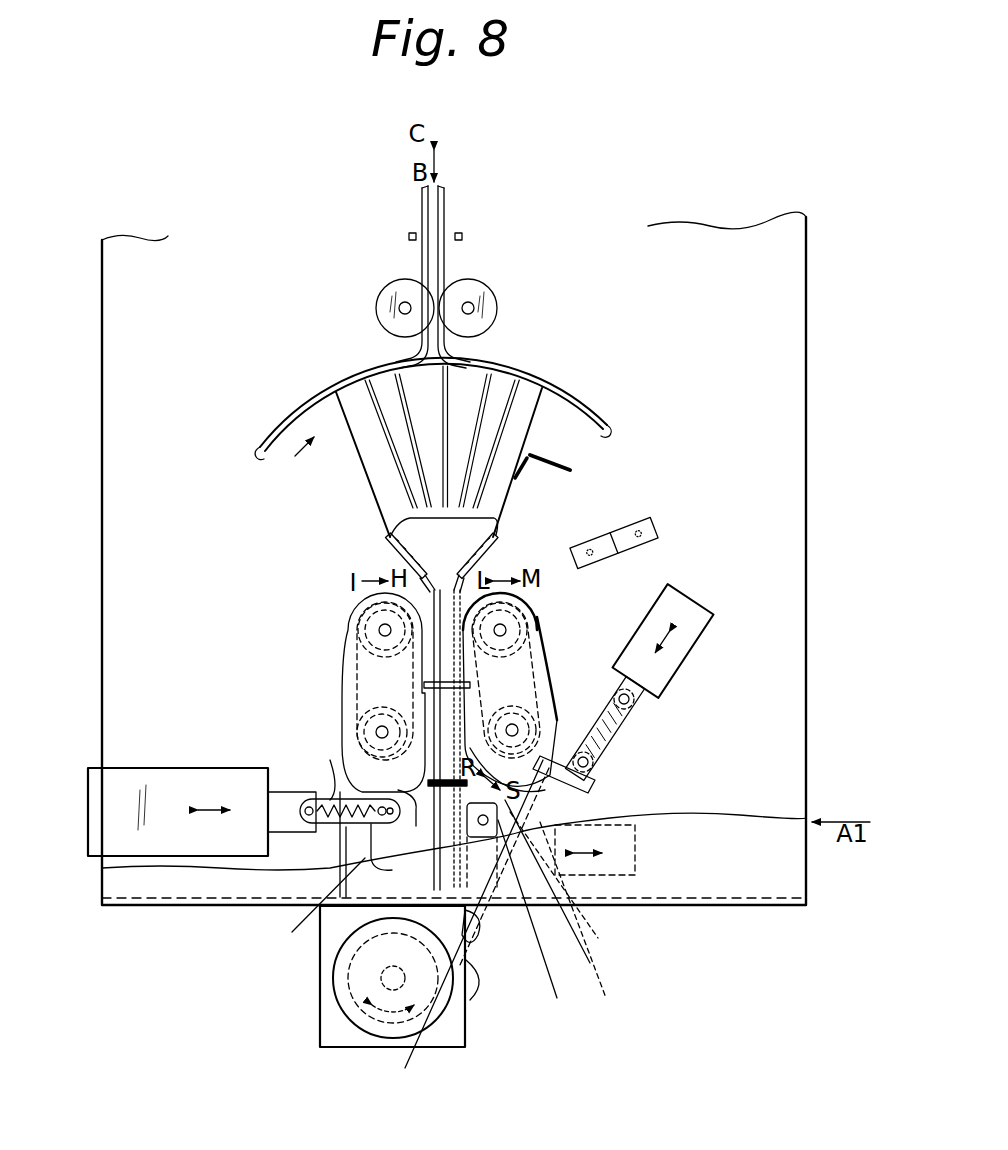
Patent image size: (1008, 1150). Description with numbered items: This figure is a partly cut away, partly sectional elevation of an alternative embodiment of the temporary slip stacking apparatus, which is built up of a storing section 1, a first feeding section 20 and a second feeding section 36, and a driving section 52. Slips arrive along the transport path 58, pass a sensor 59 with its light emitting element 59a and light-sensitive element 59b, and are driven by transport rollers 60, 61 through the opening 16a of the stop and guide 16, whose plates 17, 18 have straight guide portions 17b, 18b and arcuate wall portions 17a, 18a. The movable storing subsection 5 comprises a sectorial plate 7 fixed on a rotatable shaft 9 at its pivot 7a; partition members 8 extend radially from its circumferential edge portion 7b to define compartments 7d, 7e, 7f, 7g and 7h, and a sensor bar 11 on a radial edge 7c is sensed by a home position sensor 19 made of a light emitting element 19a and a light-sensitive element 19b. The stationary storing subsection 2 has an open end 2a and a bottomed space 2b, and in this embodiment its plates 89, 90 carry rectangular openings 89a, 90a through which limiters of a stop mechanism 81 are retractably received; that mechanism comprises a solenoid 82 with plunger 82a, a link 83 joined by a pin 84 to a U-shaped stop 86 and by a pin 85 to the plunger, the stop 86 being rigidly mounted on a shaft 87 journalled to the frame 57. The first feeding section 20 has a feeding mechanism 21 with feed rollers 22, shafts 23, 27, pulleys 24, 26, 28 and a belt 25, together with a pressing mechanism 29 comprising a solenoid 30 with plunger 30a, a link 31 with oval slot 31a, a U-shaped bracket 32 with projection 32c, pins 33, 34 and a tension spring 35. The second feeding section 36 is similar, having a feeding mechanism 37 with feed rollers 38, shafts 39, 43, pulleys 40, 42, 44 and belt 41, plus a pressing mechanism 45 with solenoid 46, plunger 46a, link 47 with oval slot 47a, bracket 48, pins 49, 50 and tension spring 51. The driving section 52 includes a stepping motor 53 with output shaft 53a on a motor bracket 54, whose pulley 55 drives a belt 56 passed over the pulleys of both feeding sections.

The storing section 1 is at (682, 387).
The stationary storing subsection 2 is at (568, 530).
The open end 2a is at (475, 560).
The bottomed space 2b is at (335, 935).
The movable storing subsection 5 is at (548, 422).
The sectorial plate 7 is at (427, 394).
The pivot 7a is at (442, 479).
The circumferential edge portion 7b is at (560, 394).
The radial edge 7c is at (556, 472).
The compartment 7d is at (535, 372).
The compartment 7e is at (505, 360).
The compartment 7f is at (458, 354).
The compartment 7g is at (400, 356).
The compartment 7h is at (372, 368).
The partition members 8 is at (395, 480).
The rotatable shaft 9 is at (400, 548).
The sensor bar 11 is at (522, 472).
The stop and guide 16 is at (491, 277).
The opening 16a is at (412, 345).
The plate 17 is at (446, 246).
The arcuate wall portion 17a is at (256, 450).
The straight guide portion 17b is at (420, 196).
The plate 18 is at (446, 256).
The arcuate wall portion 18a is at (608, 429).
The straight guide portion 18b is at (446, 200).
The home position sensor 19 is at (657, 512).
The light emitting element 19a is at (605, 535).
The light-sensitive element 19b is at (622, 530).
The first feeding section 20 is at (124, 559).
The feeding mechanism 21 is at (282, 578).
The feed rollers 22 is at (331, 683).
The shaft 23 is at (360, 608).
The pulley 24 is at (358, 640).
The belt 25 is at (352, 664).
The pulley 26 is at (345, 736).
The shaft 27 is at (345, 742).
The pulley 28 is at (352, 718).
The pressing mechanism 29 is at (205, 680).
The solenoid 30 is at (158, 768).
The plunger 30a is at (282, 790).
The link 31 is at (355, 844).
The oval slot 31a is at (420, 870).
The bracket 32 is at (360, 683).
The projection 32c is at (466, 830).
The pin 33 is at (312, 824).
The pin 34 is at (313, 898).
The tension spring 35 is at (330, 784).
The second feeding section 36 is at (756, 581).
The feeding mechanism 37 is at (632, 576).
The feed rollers 38 is at (537, 680).
The shaft 39 is at (545, 616).
The pulley 40 is at (538, 630).
The belt 41 is at (540, 661).
The pulley 42 is at (545, 706).
The shaft 43 is at (530, 728).
The pulley 44 is at (540, 688).
The pressing mechanism 45 is at (645, 615).
The solenoid 46 is at (651, 687).
The plunger 46a is at (690, 682).
The link 47 is at (650, 699).
The oval slot 47a is at (582, 784).
The bracket 48 is at (615, 690).
The pin 49 is at (650, 716).
The pin 50 is at (596, 786).
The tension spring 51 is at (612, 766).
The driving section 52 is at (500, 1000).
The stepping motor 53 is at (385, 981).
The output shaft 53a is at (322, 986).
The motor bracket 54 is at (472, 985).
The pulley 55 is at (330, 1012).
The belt 56 is at (469, 929).
The frame 57 is at (672, 907).
The transport path 58 is at (440, 192).
The sensor 59 is at (372, 227).
The light emitting element 59a is at (454, 233).
The light-sensitive element 59b is at (376, 238).
The transport roller 60 is at (393, 284).
The transport roller 61 is at (497, 304).
The stop mechanism 81 is at (720, 815).
The solenoid 82 is at (640, 862).
The plunger 82a is at (600, 905).
The link 83 is at (581, 922).
The pin 84 is at (492, 934).
The pin 85 is at (560, 886).
The stop 86 is at (556, 894).
The shaft 87 is at (535, 922).
The plate 89 is at (490, 521).
The rectangular opening 89a is at (333, 760).
The plate 90 is at (553, 508).
The rectangular opening 90a is at (528, 792).